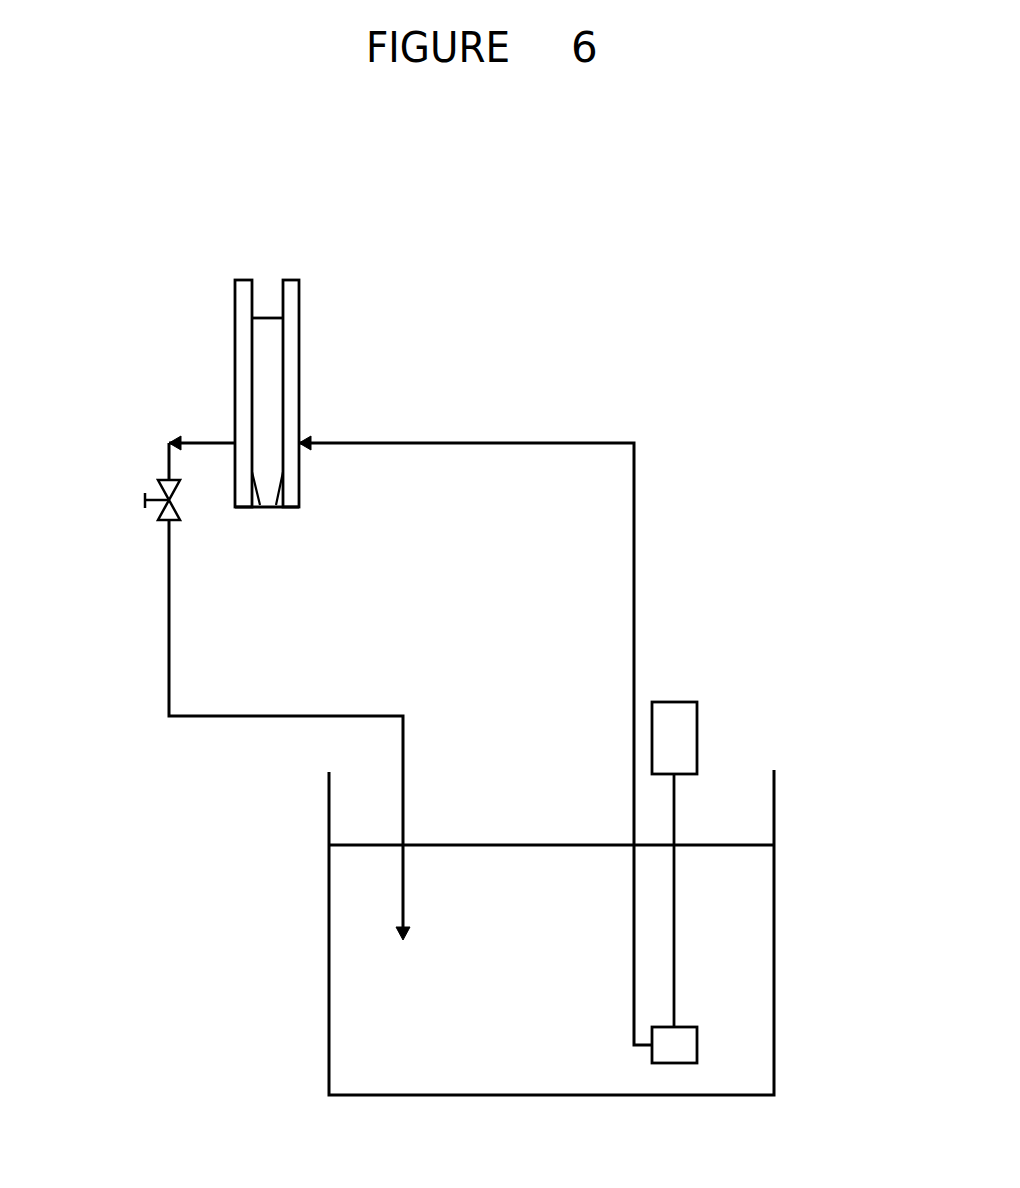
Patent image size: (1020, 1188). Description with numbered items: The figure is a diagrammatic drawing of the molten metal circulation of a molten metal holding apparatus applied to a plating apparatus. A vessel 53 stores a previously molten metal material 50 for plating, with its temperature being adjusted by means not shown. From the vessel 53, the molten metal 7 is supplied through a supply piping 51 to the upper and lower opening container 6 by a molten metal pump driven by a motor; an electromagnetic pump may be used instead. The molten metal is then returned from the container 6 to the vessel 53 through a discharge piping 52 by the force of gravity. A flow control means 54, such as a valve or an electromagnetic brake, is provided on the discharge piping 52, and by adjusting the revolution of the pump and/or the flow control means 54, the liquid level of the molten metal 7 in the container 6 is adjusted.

The upper and lower opening container 6 is at (300, 388).
The molten metal 7 is at (268, 348).
The molten metal material 50 is at (455, 892).
The supply piping 51 is at (467, 443).
The discharge piping 52 is at (168, 620).
The vessel 53 is at (774, 930).
The flow control means 54 is at (145, 493).